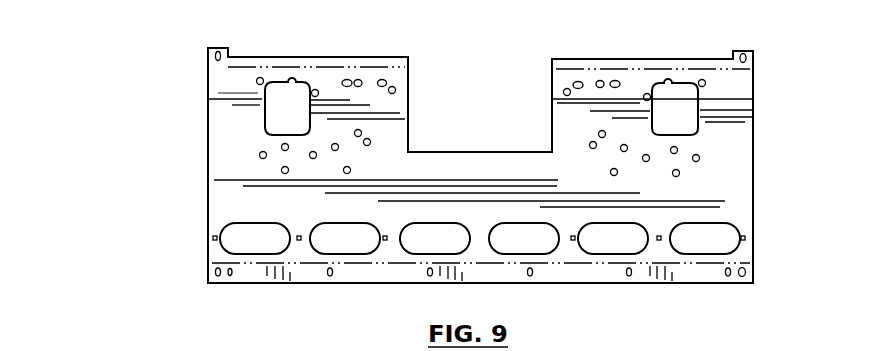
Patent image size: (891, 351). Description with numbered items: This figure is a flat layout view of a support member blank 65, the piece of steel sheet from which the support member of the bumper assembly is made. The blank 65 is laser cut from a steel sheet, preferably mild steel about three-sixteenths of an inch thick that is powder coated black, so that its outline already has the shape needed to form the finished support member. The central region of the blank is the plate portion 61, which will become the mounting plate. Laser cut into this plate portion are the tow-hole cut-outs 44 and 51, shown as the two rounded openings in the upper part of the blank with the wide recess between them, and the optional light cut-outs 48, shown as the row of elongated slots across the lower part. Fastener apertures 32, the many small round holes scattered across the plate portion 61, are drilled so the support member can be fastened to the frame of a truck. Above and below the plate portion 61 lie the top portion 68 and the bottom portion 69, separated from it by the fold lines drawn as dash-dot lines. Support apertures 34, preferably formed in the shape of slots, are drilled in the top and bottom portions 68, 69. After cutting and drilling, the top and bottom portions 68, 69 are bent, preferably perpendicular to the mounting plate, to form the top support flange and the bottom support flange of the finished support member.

The support member blank 65 is at (180, 194).
The tow-hole cut-out 51 is at (518, 73).
The top portion 68 is at (637, 67).
The bottom portion 69 is at (575, 275).
The support apertures 34 is at (757, 62).
The tow-hole cut-out 44 is at (272, 115).
The fastener apertures 32 is at (680, 174).
The plate portion 61 is at (737, 193).
The light cut-outs 48 is at (324, 240).